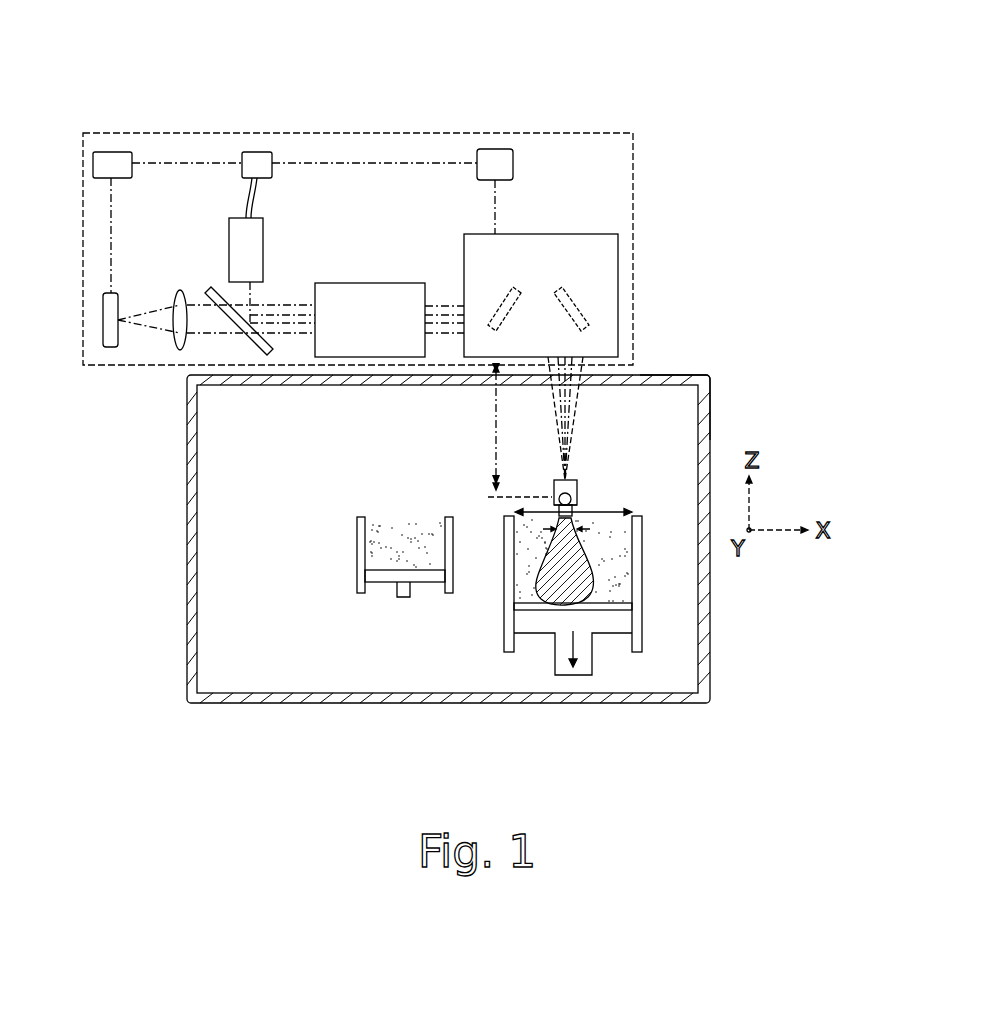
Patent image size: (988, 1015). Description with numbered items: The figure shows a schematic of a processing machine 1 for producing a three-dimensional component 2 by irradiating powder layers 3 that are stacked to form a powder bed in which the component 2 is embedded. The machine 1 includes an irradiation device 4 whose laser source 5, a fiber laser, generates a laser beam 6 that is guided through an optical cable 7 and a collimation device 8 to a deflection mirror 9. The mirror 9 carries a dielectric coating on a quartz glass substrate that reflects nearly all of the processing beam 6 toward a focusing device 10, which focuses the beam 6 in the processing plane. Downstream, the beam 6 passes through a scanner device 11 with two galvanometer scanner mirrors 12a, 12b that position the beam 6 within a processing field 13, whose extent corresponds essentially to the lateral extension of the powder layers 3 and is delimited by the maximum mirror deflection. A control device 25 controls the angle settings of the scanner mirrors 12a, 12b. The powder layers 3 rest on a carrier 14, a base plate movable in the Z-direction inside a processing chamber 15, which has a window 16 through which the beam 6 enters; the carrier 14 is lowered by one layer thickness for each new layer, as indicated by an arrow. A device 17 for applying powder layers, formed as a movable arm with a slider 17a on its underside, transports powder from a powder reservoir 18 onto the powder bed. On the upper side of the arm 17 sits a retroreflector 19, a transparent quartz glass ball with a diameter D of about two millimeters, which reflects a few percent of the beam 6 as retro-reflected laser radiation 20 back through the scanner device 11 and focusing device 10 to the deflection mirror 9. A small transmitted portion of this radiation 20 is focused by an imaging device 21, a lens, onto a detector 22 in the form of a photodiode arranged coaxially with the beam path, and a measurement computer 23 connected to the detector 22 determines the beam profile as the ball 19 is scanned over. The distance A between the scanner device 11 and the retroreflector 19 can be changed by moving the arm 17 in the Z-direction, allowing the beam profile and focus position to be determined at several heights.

The processing machine 1 is at (95, 102).
The three-dimensional component 2 is at (582, 587).
The powder layers 3 is at (610, 560).
The irradiation device 4 is at (338, 133).
The laser source 5 is at (260, 165).
The laser beam 6 is at (250, 300).
The optical cable 7 is at (245, 197).
The collimation device 8 is at (253, 247).
The deflection mirror 9 is at (233, 311).
The focusing device 10 is at (378, 297).
The scanner device 11 is at (605, 290).
The first scanner mirror 12a is at (503, 300).
The second scanner mirror 12b is at (573, 300).
The processing field 13 is at (595, 512).
The carrier 14 is at (520, 618).
The processing chamber 15 is at (192, 472).
The window 16 is at (653, 378).
The device for applying powder layers 17 is at (556, 490).
The slider 17a is at (554, 506).
The powder reservoir 18 is at (366, 546).
The retroreflector 19 is at (576, 478).
The retro-reflected laser radiation 20 is at (583, 397).
The imaging device 21 is at (176, 330).
The detector 22 is at (105, 337).
The measurement computer 23 is at (113, 163).
The control device 25 is at (498, 160).
The distance A is at (496, 405).
The diameter D is at (578, 532).